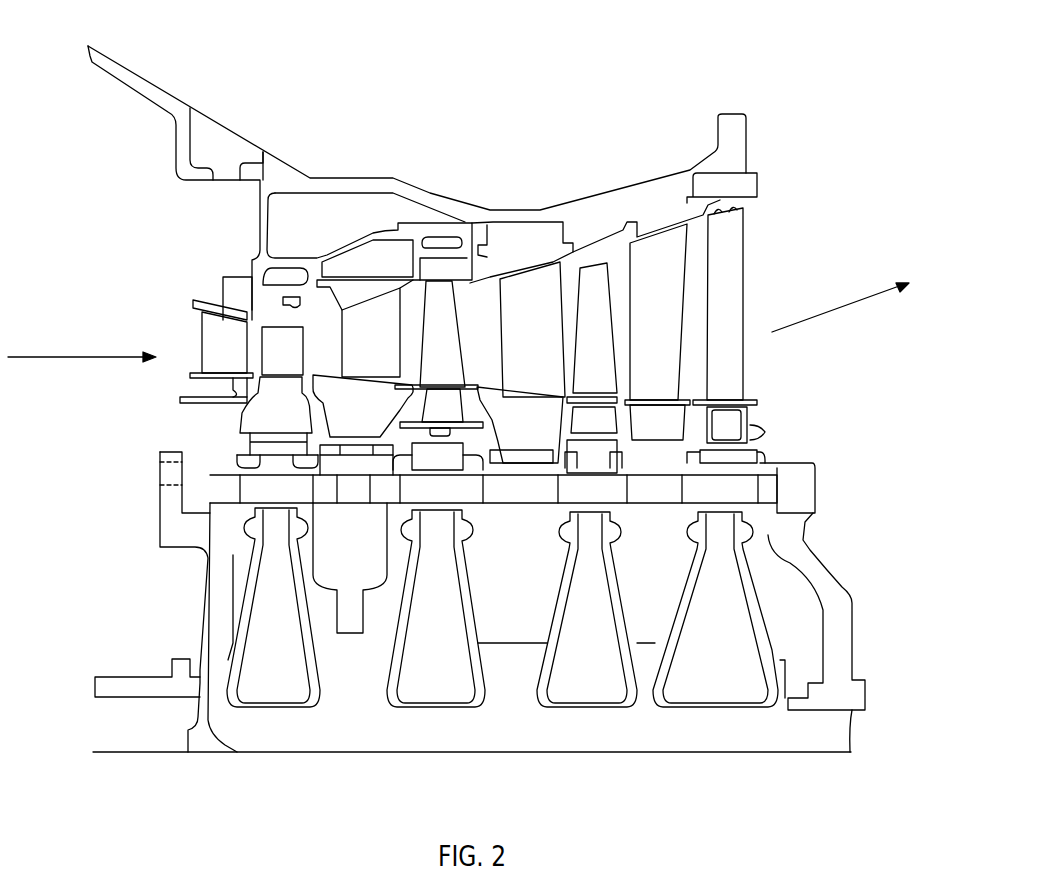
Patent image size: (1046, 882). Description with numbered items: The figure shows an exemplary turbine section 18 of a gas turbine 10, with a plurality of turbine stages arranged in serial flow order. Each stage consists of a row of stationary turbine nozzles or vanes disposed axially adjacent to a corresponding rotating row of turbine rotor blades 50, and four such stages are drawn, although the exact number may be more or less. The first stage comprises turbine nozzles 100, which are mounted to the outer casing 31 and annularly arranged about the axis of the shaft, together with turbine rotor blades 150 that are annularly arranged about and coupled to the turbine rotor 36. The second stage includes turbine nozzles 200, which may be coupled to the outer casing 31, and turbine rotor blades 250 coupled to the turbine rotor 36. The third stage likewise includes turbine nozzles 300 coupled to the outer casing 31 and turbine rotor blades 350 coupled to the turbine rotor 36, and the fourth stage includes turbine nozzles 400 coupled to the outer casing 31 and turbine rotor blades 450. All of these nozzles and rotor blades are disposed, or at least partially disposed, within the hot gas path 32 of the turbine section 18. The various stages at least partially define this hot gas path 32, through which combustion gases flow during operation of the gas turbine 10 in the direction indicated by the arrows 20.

The gas turbine 10 is at (570, 196).
The turbine section 18 is at (303, 88).
The arrows 20 is at (40, 360).
The outer casing 31 is at (380, 235).
The hot gas path 32 is at (331, 354).
The turbine rotor 36 is at (338, 730).
The turbine rotor blades 50 is at (295, 357).
The turbine nozzles 100 is at (244, 351).
The turbine rotor blades 150 is at (267, 352).
The turbine nozzles 200 is at (388, 352).
The turbine rotor blades 250 is at (438, 310).
The turbine nozzles 300 is at (546, 342).
The turbine rotor blades 350 is at (592, 287).
The turbine nozzles 400 is at (675, 304).
The turbine rotor blades 450 is at (727, 278).